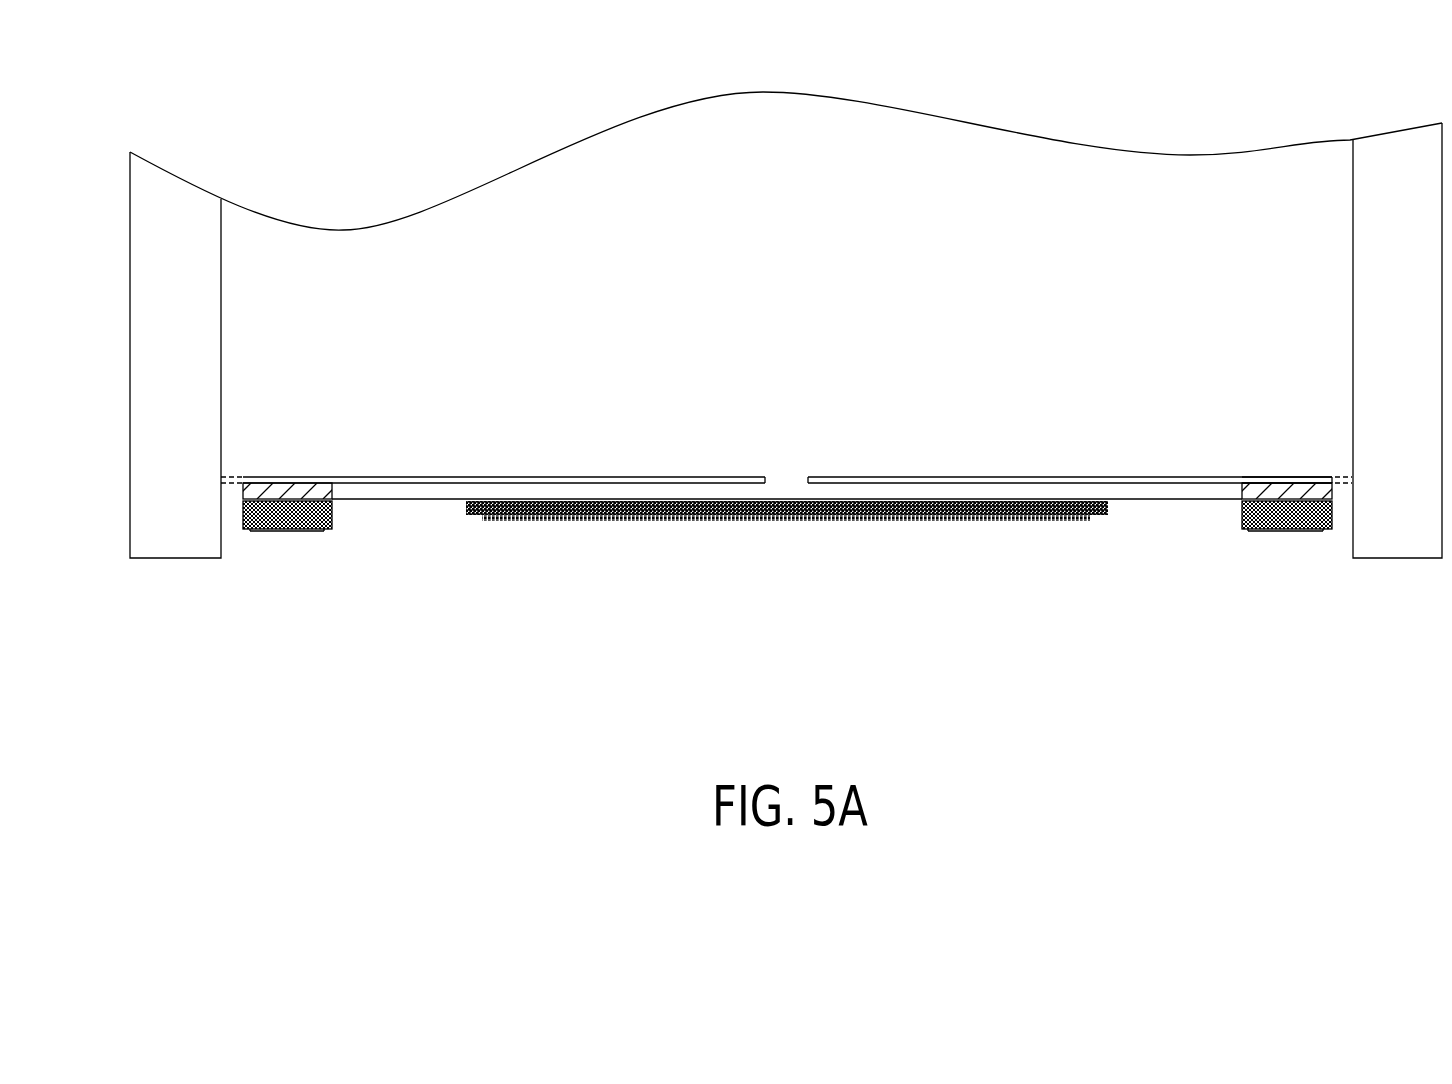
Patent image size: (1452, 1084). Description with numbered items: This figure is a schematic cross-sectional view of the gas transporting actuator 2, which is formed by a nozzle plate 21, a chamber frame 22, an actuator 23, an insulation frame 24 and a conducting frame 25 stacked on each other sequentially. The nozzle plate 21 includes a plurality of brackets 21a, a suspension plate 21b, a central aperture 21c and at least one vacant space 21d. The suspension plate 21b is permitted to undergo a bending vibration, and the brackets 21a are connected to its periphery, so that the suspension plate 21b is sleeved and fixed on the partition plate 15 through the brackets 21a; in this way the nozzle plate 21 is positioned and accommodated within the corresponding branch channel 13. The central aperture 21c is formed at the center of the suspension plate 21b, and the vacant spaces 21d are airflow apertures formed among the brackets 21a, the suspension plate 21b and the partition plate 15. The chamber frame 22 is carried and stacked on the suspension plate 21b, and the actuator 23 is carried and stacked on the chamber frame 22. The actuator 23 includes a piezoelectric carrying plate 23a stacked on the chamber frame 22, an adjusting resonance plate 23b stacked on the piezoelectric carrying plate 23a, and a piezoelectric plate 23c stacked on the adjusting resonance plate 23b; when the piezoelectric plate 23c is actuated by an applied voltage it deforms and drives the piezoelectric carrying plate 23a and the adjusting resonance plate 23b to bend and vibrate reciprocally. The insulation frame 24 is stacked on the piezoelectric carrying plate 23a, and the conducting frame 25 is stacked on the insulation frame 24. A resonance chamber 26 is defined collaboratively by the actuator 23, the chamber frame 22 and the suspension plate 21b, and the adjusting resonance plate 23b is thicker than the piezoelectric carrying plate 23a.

The gas transporting actuator 2 is at (1368, 83).
The branch channel 13 is at (689, 232).
The partition plate 15 is at (185, 537).
The nozzle plate 21 is at (819, 400).
The bracket 21a is at (1338, 475).
The suspension plate 21b is at (1196, 478).
The central aperture 21c is at (788, 480).
The vacant space 21d is at (1340, 490).
The chamber frame 22 is at (1303, 490).
The actuator 23 is at (787, 637).
The piezoelectric carrying plate 23a is at (1168, 499).
The adjusting resonance plate 23b is at (1062, 508).
The piezoelectric plate 23c is at (786, 600).
The insulation frame 24 is at (1284, 515).
The conducting frame 25 is at (1255, 531).
The resonance chamber 26 is at (566, 488).